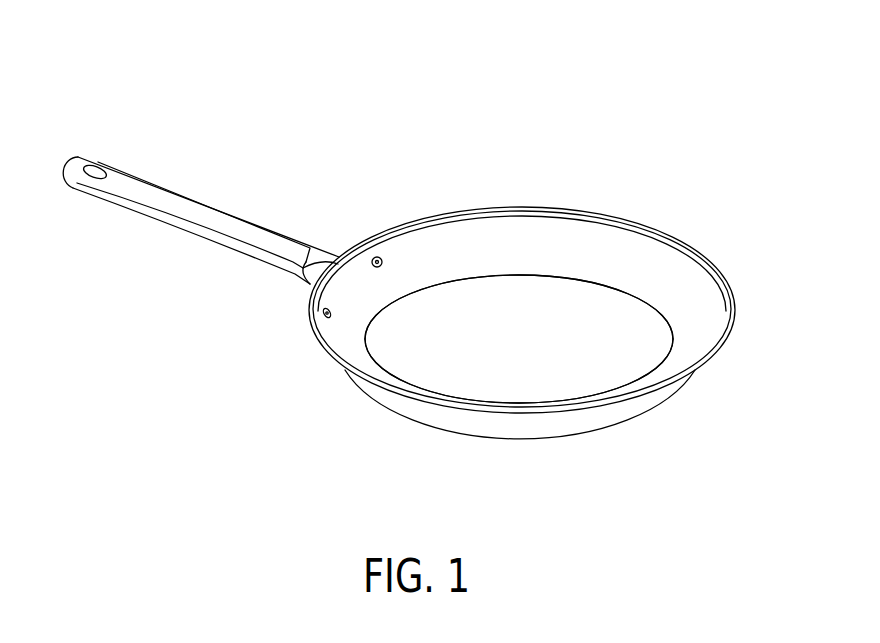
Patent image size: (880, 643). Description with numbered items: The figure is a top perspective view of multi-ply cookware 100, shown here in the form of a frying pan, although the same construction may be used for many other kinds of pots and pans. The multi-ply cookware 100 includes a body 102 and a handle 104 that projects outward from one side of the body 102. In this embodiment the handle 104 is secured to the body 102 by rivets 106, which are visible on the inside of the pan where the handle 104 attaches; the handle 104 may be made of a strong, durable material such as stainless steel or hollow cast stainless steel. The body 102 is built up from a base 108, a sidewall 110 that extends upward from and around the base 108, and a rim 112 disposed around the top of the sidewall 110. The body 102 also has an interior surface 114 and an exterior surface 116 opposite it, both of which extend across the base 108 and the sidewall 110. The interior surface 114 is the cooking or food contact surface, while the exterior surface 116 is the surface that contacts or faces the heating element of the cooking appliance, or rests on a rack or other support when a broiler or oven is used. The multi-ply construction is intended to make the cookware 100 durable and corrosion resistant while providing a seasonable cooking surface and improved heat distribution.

The multi-ply cookware 100 is at (192, 77).
The body 102 is at (617, 448).
The handle 104 is at (85, 150).
The rivets 106 is at (329, 308).
The base 108 is at (538, 363).
The sidewall 110 is at (517, 238).
The rim 112 is at (694, 247).
The interior surface 114 is at (407, 378).
The exterior surface 116 is at (514, 428).